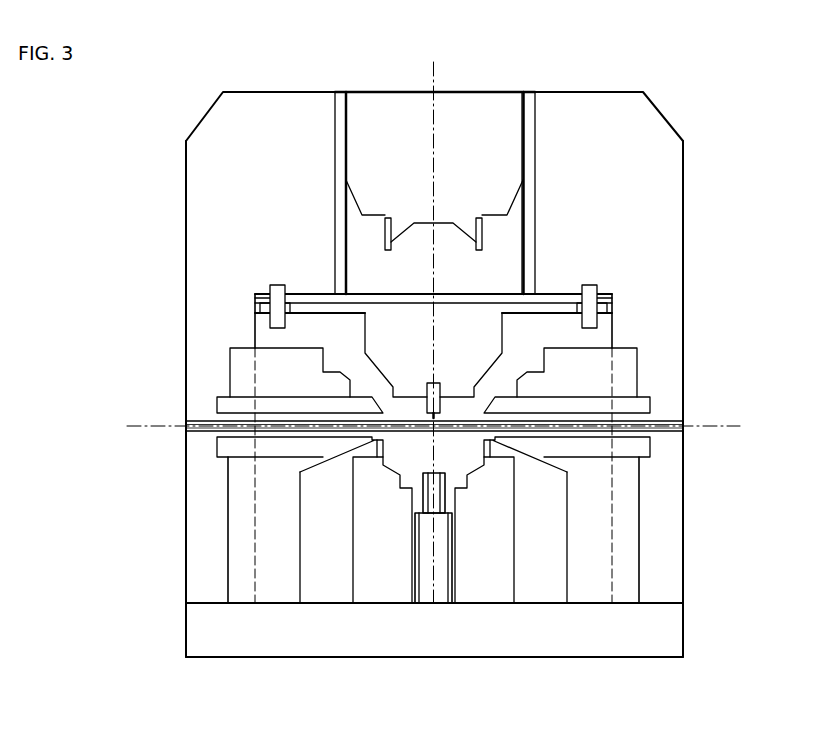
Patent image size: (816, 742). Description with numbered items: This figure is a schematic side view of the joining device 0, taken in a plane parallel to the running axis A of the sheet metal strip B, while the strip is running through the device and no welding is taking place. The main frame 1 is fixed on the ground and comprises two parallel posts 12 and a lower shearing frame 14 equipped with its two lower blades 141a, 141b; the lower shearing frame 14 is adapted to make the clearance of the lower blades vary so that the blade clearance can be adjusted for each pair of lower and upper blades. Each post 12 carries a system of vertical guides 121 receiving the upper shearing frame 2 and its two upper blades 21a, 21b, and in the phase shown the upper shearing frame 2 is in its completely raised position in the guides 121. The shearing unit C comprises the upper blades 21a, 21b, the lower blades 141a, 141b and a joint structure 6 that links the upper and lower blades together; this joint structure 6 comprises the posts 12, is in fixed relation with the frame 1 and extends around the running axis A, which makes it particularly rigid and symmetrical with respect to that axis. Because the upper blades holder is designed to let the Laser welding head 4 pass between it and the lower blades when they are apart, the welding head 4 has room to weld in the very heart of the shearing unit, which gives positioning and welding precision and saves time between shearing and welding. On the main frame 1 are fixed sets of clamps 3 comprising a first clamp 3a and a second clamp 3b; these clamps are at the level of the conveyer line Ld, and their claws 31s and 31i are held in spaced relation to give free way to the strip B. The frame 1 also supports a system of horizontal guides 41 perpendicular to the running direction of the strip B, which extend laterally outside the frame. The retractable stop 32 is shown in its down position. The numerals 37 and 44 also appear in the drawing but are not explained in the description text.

The main frame 1 is at (568, 633).
The upper shearing frame 2 is at (420, 112).
The sets of clamps 3 is at (243, 495).
The first clamp 3a is at (268, 525).
The second clamp 3b is at (595, 547).
The Laser welding head 4 is at (444, 387).
The joint structure 6 is at (208, 247).
The posts 12 is at (245, 148).
The lower shearing frame 14 is at (477, 587).
The upper blade 21a is at (391, 235).
The upper blade 21b is at (477, 218).
The lower claw 31i is at (293, 450).
The upper claw 31s is at (290, 407).
The retractable stop 32 is at (434, 514).
The block outer face 37 is at (230, 573).
The horizontal guides 41 is at (592, 292).
The die holder cavity 44 is at (415, 366).
The vertical guides 121 is at (335, 228).
The lower blade 141a is at (377, 447).
The lower blade 141b is at (483, 447).
The axis of sheet metal strip running A is at (172, 426).
The sheet metal strip B is at (203, 409).
The shearing unit C is at (484, 88).
The joining device 0 is at (93, 443).
The conveyer line Ld is at (433, 413).